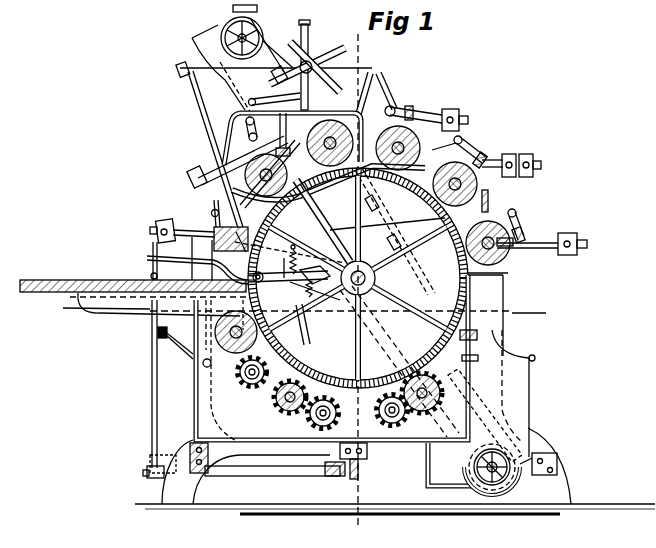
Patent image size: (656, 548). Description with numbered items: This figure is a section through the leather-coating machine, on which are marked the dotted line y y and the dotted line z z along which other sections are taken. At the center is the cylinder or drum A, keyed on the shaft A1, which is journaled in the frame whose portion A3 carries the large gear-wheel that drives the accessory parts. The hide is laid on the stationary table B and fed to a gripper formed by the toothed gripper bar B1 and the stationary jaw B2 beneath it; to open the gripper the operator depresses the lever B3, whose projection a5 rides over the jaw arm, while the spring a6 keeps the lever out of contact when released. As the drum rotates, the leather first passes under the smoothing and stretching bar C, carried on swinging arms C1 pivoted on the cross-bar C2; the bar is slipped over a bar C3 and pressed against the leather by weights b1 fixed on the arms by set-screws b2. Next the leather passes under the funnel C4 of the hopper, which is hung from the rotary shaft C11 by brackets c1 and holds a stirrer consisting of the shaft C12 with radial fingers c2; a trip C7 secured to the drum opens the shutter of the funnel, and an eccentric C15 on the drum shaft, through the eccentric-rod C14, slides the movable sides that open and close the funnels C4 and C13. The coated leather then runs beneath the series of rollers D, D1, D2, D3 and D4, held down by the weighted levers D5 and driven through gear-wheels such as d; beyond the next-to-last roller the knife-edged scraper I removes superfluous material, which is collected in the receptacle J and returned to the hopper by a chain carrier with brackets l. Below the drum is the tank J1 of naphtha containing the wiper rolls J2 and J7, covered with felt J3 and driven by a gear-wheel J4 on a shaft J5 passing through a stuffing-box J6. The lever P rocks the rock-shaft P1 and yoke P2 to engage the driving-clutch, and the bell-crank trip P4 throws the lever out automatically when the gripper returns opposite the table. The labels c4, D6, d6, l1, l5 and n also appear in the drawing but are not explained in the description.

The cylinder or drum A is at (358, 278).
The shaft A1 is at (318, 312).
The frame portion A3 is at (497, 268).
The table B is at (80, 278).
The gripper bar B1 is at (288, 263).
The stationary jaw B2 is at (290, 272).
The lever B3 is at (146, 260).
The weights b1 is at (169, 226).
The set-screws b2 is at (162, 229).
The smoothing and stretching bar C is at (237, 230).
The swinging arms C1 is at (206, 225).
The cross-bar C2 is at (215, 205).
The bar C3 is at (200, 240).
The funnel or chute C4 is at (246, 126).
The trip C7 is at (396, 88).
The rotary shaft C11 is at (228, 26).
The stirrer shaft C12 is at (185, 75).
The funnel C13 is at (356, 113).
The eccentric-rod C14 is at (395, 100).
The eccentric C15 is at (366, 72).
The brackets c1 is at (276, 80).
The stirrer fingers c2 is at (322, 55).
The arm c4 is at (275, 99).
The roller D is at (273, 175).
The roller D1 is at (330, 144).
The roller D2 is at (403, 153).
The roller D3 is at (478, 183).
The roller D4 is at (484, 241).
The weighted levers D5 is at (434, 112).
The weighted arm D6 is at (548, 240).
The link d6 is at (436, 138).
The gear-wheel d is at (284, 268).
The cleaner or scraper I is at (502, 203).
The receptacle J is at (492, 412).
The tank J1 is at (194, 396).
The wiper roll J2 is at (300, 380).
The wiping material J3 is at (328, 372).
The gear-wheel J4 is at (476, 427).
The shaft J5 is at (231, 312).
The stuffing-box J6 is at (482, 433).
The wiper roll J7 is at (476, 303).
The brackets l is at (300, 22).
The bar l1 is at (387, 223).
The shaft end l5 is at (303, 23).
The pawl n is at (307, 286).
The projection a5 is at (304, 259).
The spring a6 is at (320, 293).
The lever P is at (152, 356).
The rock-shaft P1 is at (268, 468).
The yoke P2 is at (366, 460).
The trip P4 is at (185, 348).
The dotted line y y is at (357, 280).
The dotted line z z is at (303, 310).